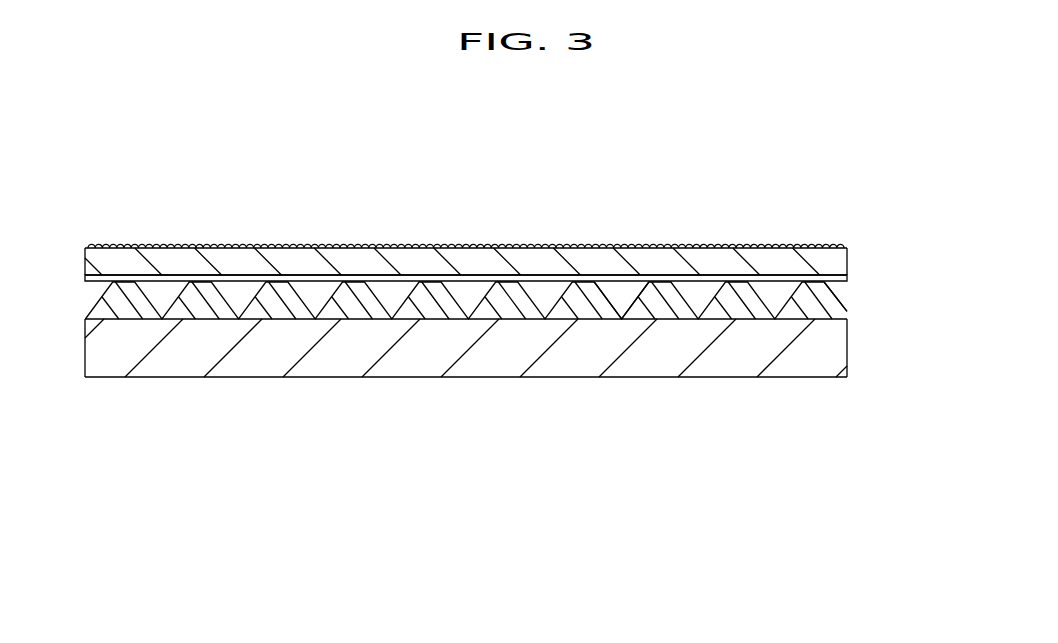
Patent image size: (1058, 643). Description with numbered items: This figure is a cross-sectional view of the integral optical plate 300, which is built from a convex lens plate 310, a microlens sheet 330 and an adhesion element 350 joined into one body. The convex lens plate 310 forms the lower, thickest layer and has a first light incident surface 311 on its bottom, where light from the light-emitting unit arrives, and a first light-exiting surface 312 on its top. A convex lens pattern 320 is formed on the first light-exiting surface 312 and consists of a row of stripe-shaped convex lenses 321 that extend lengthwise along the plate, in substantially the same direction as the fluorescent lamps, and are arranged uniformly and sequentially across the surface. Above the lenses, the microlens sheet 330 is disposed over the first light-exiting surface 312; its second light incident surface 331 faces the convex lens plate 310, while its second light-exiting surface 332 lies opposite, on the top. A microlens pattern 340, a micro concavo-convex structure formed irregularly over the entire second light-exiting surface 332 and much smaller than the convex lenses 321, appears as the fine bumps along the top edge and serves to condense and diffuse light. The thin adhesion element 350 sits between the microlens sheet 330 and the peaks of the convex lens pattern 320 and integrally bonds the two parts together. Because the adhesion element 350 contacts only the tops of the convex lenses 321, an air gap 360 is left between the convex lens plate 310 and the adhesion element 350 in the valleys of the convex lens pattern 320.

The integral optical plate 300 is at (745, 152).
The convex lens plate 310 is at (503, 391).
The first light incident surface 311 is at (723, 377).
The first light-exiting surface 312 is at (618, 320).
The convex lens pattern 320 is at (513, 322).
The convex lens 321 is at (810, 308).
The microlens sheet 330 is at (503, 223).
The second light incident surface 331 is at (690, 273).
The second light-exiting surface 332 is at (742, 250).
The microlens pattern 340 is at (820, 232).
The adhesion element 350 is at (848, 280).
The air gap 360 is at (618, 293).